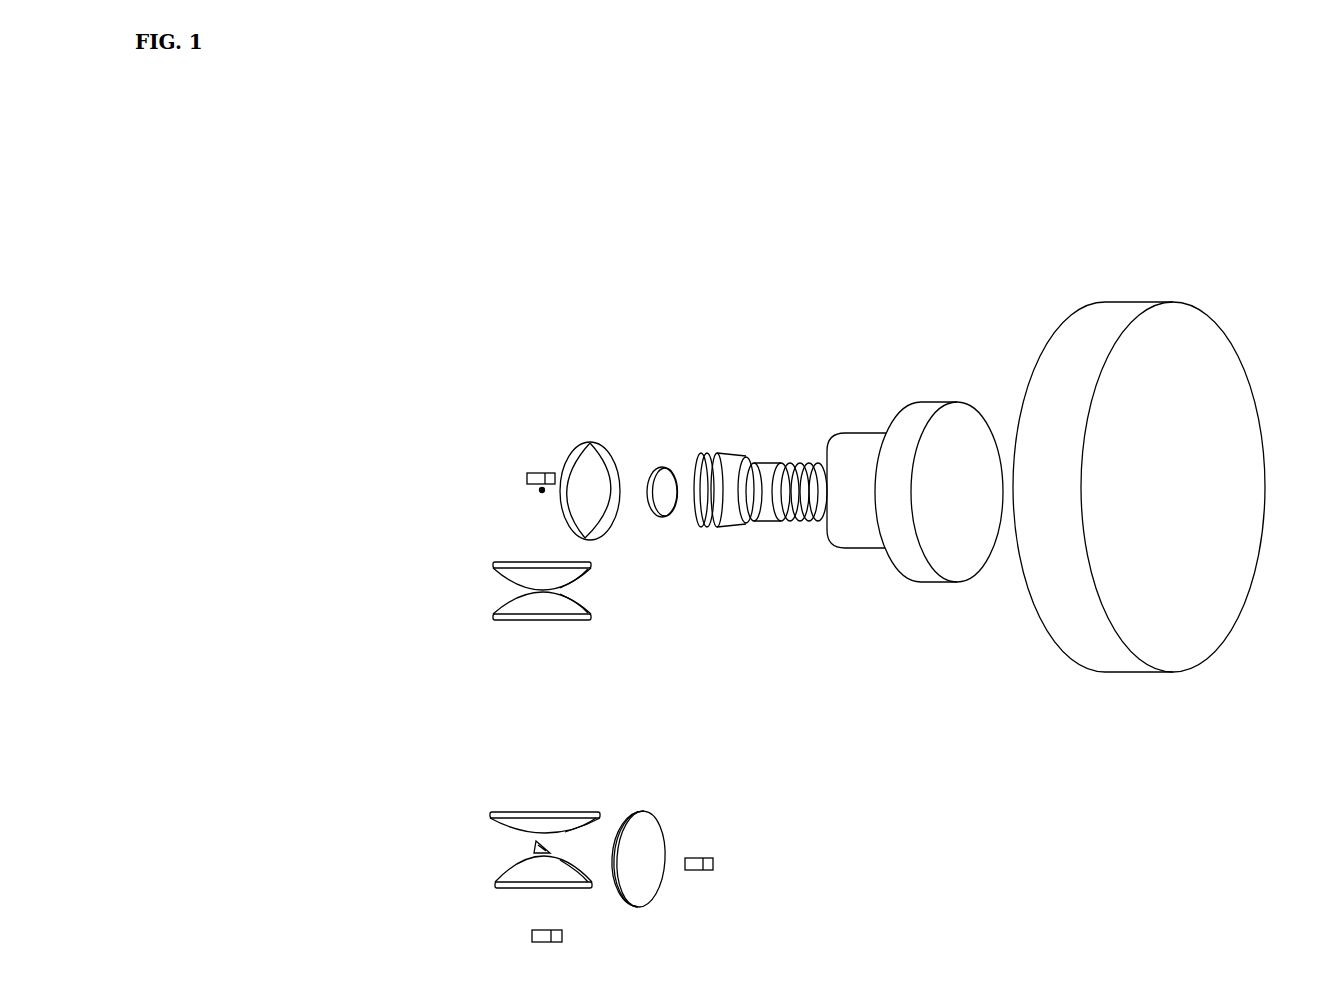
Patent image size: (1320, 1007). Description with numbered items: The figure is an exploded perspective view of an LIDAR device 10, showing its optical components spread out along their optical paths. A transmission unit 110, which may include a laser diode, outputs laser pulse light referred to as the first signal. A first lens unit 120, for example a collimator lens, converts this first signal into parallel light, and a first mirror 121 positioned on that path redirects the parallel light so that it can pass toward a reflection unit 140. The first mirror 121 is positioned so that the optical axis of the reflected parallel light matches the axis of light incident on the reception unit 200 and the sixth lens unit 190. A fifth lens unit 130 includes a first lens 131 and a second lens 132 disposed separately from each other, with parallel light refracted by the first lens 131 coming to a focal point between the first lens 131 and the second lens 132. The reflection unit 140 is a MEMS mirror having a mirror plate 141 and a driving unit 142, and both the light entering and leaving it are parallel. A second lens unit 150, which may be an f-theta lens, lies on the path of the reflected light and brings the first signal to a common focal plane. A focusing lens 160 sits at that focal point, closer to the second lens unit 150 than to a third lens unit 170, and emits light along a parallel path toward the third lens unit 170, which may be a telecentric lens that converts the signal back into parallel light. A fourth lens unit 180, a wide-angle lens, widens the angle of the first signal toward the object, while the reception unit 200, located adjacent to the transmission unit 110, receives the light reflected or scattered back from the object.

The LIDAR device 10 is at (441, 235).
The transmission unit 110 is at (705, 858).
The first lens unit 120 is at (641, 811).
The first mirror 121 is at (532, 845).
The fifth lens unit 130 is at (420, 833).
The first lens 131 is at (490, 815).
The second lens 132 is at (492, 590).
The reflection unit 140 is at (472, 460).
The mirror plate 141 is at (538, 490).
The driving unit 142 is at (527, 478).
The second lens unit 150 is at (590, 442).
The focusing lens 160 is at (660, 466).
The third lens unit 170 is at (753, 460).
The fourth lens unit 180 is at (1183, 290).
The sixth lens unit 190 is at (495, 884).
The reception unit 200 is at (532, 936).